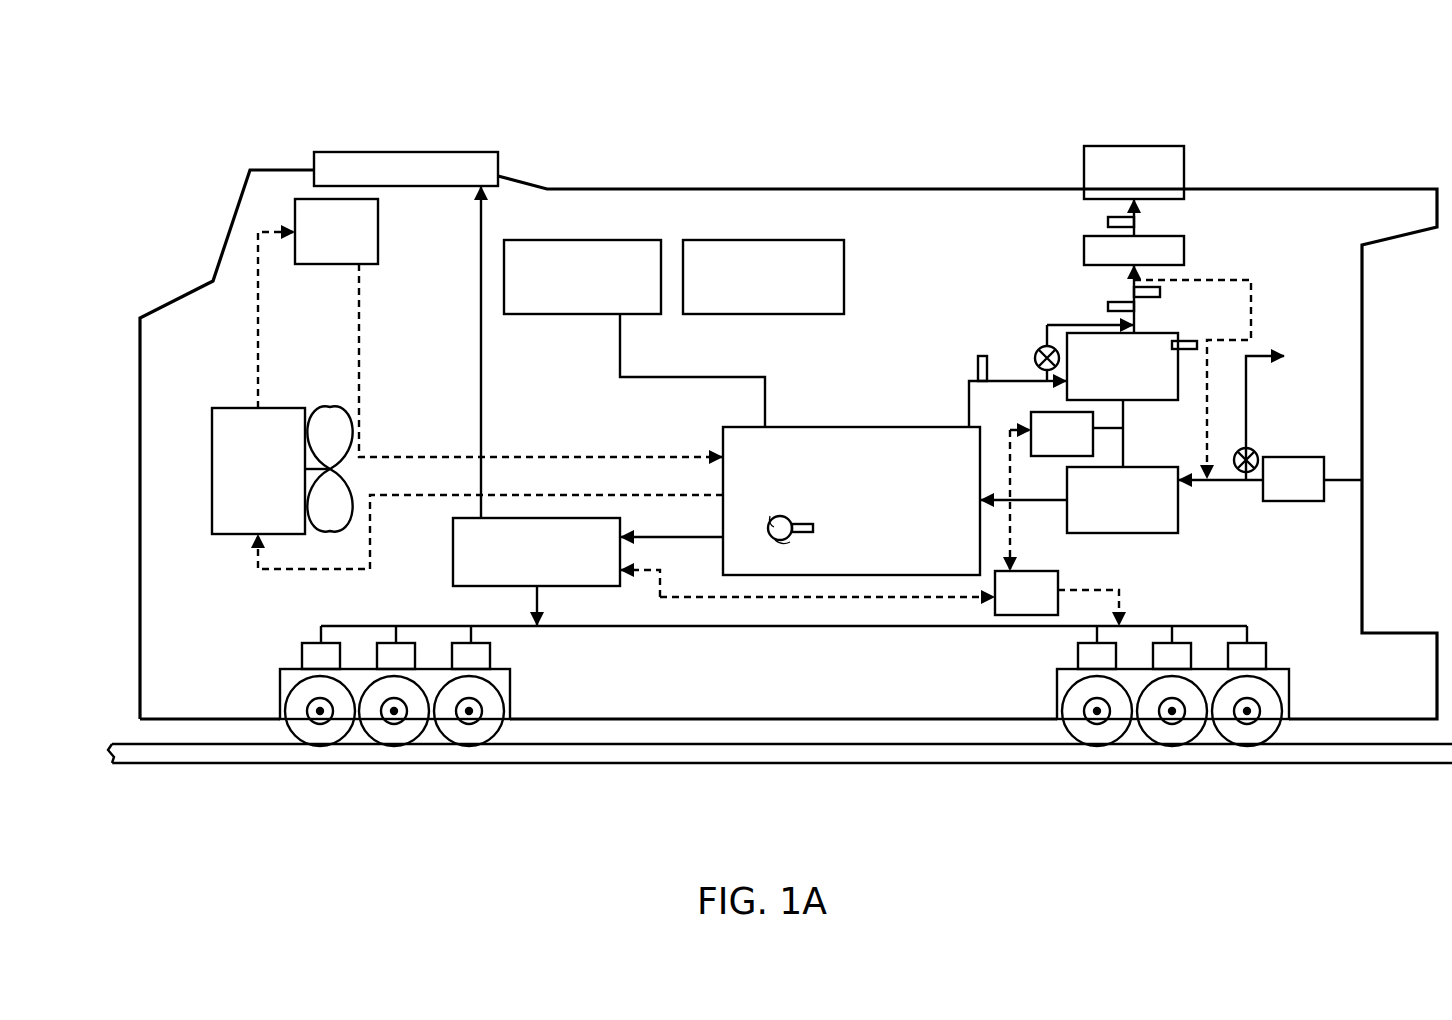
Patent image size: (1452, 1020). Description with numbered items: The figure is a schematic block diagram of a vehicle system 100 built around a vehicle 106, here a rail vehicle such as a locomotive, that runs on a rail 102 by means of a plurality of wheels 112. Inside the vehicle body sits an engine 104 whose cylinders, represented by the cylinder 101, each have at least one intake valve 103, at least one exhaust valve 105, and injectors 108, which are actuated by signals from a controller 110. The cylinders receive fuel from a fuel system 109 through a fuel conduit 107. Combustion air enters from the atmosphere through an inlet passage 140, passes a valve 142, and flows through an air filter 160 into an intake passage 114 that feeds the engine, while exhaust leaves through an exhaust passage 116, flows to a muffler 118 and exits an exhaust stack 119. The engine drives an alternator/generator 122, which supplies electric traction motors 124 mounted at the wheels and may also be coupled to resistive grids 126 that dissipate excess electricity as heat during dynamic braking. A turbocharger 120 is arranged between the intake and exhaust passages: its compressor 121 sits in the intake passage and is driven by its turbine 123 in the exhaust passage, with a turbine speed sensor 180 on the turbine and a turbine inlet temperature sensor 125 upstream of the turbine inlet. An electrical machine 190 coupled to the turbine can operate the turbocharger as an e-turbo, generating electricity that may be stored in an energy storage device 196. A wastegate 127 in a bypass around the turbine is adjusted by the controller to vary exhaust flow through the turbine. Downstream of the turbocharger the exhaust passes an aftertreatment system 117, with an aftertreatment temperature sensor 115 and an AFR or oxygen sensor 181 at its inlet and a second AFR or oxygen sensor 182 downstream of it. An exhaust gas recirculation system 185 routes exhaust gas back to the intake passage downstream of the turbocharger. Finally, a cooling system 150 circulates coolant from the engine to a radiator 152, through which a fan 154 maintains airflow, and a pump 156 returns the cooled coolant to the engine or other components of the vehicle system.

The vehicle system 100 is at (1388, 74).
The cylinder 101 is at (793, 518).
The rail 102 is at (1362, 763).
The intake valve 103 is at (776, 518).
The engine 104 is at (851, 501).
The exhaust valve 105 is at (780, 540).
The vehicle 106 is at (945, 189).
The fuel conduit 107 is at (620, 337).
The injectors 108 is at (812, 530).
The fuel system 109 is at (580, 240).
The controller 110 is at (738, 240).
The wheels 112 is at (495, 699).
The intake passage 114 is at (1065, 500).
The aftertreatment temperature sensor 115 is at (1107, 308).
The exhaust passage 116 is at (969, 420).
The aftertreatment system 117 is at (1134, 250).
The muffler 118 is at (1183, 199).
The exhaust stack 119 is at (1134, 172).
The turbocharger 120 is at (1151, 561).
The compressor 121 is at (1122, 500).
The alternator/generator 122 is at (453, 553).
The turbine 123 is at (1122, 400).
The electric traction motors 124 is at (490, 657).
The turbine inlet temperature sensor 125 is at (977, 366).
The resistive grids 126 is at (487, 152).
The wastegate 127 is at (1046, 346).
The intake passage to atmosphere 140 is at (1253, 353).
The intake valve 142 is at (1236, 465).
The cooling system 150 is at (233, 365).
The radiator 152 is at (467, 488).
The fan 154 is at (340, 405).
The pump 156 is at (490, 328).
The air filter 160 is at (1293, 479).
The turbine speed sensor 180 is at (1183, 341).
The AFR sensor or O2 sensor 181 is at (1162, 291).
The AFR sensor or O2 sensor 182 is at (1107, 226).
The exhaust gas recirculation system 185 is at (1247, 281).
The electrical machine 190 is at (1066, 434).
The energy storage device 196 is at (889, 527).